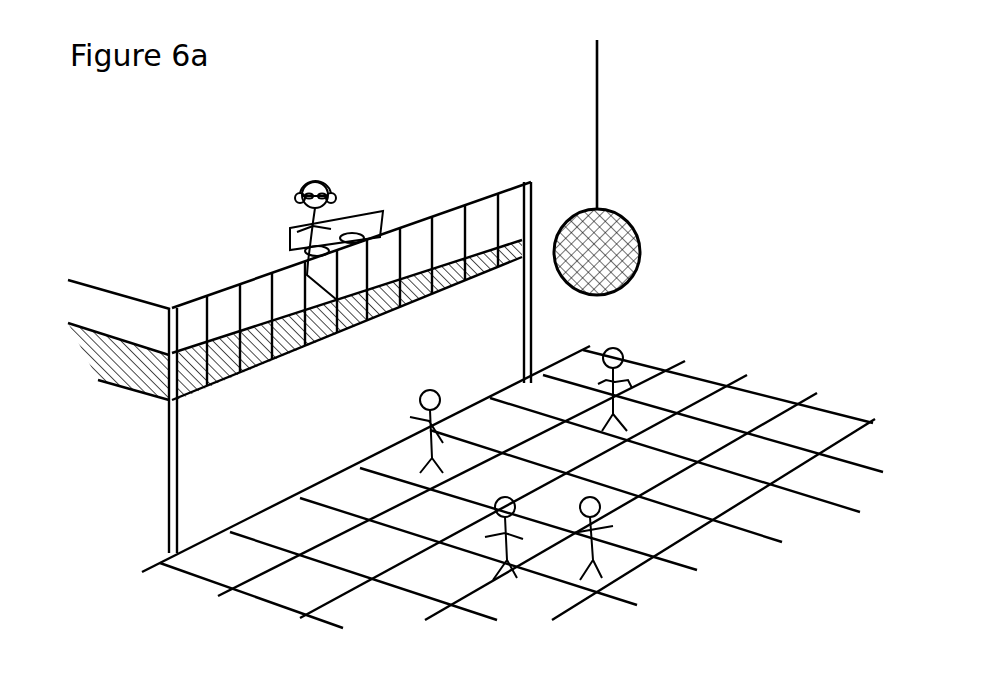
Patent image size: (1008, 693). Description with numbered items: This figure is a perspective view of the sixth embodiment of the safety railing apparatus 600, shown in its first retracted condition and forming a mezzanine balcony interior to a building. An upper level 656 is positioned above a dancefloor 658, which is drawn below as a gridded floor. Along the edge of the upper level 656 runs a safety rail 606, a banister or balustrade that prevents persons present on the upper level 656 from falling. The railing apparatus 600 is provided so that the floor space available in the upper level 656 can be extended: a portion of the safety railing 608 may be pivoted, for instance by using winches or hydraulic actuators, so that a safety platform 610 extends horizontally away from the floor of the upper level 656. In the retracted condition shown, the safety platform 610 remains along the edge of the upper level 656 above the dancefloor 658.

The railing apparatus 600 is at (758, 169).
The safety rail 606 is at (483, 198).
The portion of the safety railing 608 is at (375, 228).
The safety platform 610 is at (323, 341).
The upper level 656 is at (136, 264).
The dancefloor 658 is at (836, 421).